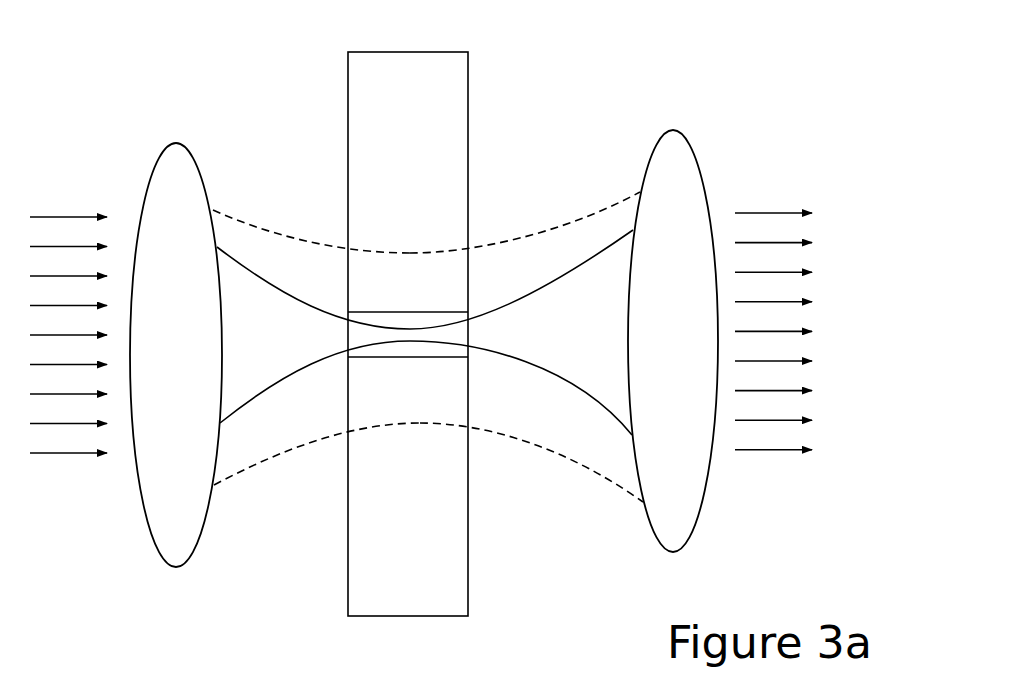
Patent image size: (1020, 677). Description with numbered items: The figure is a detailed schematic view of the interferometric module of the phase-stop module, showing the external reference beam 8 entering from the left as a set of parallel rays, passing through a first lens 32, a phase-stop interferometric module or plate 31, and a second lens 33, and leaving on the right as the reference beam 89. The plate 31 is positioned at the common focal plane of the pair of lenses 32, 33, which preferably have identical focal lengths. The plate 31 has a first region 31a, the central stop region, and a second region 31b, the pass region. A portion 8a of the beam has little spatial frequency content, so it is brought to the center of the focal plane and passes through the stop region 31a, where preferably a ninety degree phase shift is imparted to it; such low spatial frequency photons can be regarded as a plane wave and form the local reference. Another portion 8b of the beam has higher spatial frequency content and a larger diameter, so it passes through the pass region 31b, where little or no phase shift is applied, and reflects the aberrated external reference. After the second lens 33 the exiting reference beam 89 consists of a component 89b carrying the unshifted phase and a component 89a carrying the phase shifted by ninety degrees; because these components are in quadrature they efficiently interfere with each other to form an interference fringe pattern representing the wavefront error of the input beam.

The external reference beam 8 is at (56, 190).
The reference beam 89 is at (762, 188).
The lens 32 is at (176, 143).
The lens 33 is at (677, 132).
The phase-stop interferometric module or plate 31 is at (419, 105).
The first region (stop region) 31a is at (353, 352).
The second region (pass region) 31b is at (415, 549).
The portion of beam 8b is at (227, 228).
The portion of beam 8a is at (239, 383).
The component of reference beam 89b is at (567, 233).
The component of reference beam 89a is at (612, 395).